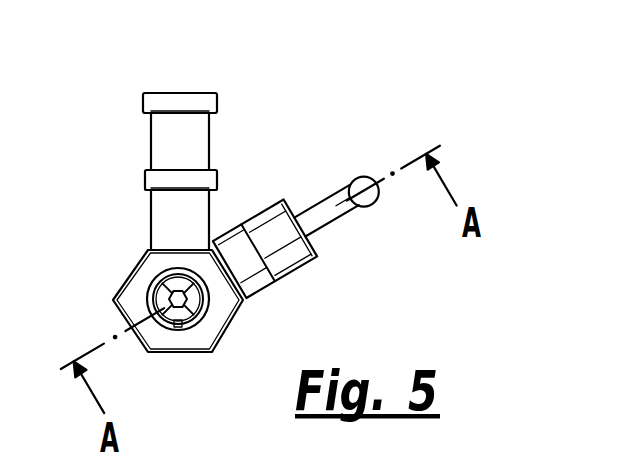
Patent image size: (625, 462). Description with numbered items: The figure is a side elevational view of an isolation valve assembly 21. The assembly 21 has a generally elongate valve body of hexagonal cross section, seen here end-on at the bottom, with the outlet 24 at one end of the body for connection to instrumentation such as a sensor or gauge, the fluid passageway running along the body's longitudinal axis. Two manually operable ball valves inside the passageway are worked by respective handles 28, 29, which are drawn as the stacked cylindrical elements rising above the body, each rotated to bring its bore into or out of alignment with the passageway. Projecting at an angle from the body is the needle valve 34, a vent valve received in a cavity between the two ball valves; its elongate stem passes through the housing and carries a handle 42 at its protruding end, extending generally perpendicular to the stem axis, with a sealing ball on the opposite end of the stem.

The isolation valve assembly 21 is at (393, 96).
The outlet 24 is at (178, 327).
The handle 28 is at (191, 103).
The handle 29 is at (146, 179).
The needle valve 34 is at (271, 205).
The handle 42 is at (356, 180).